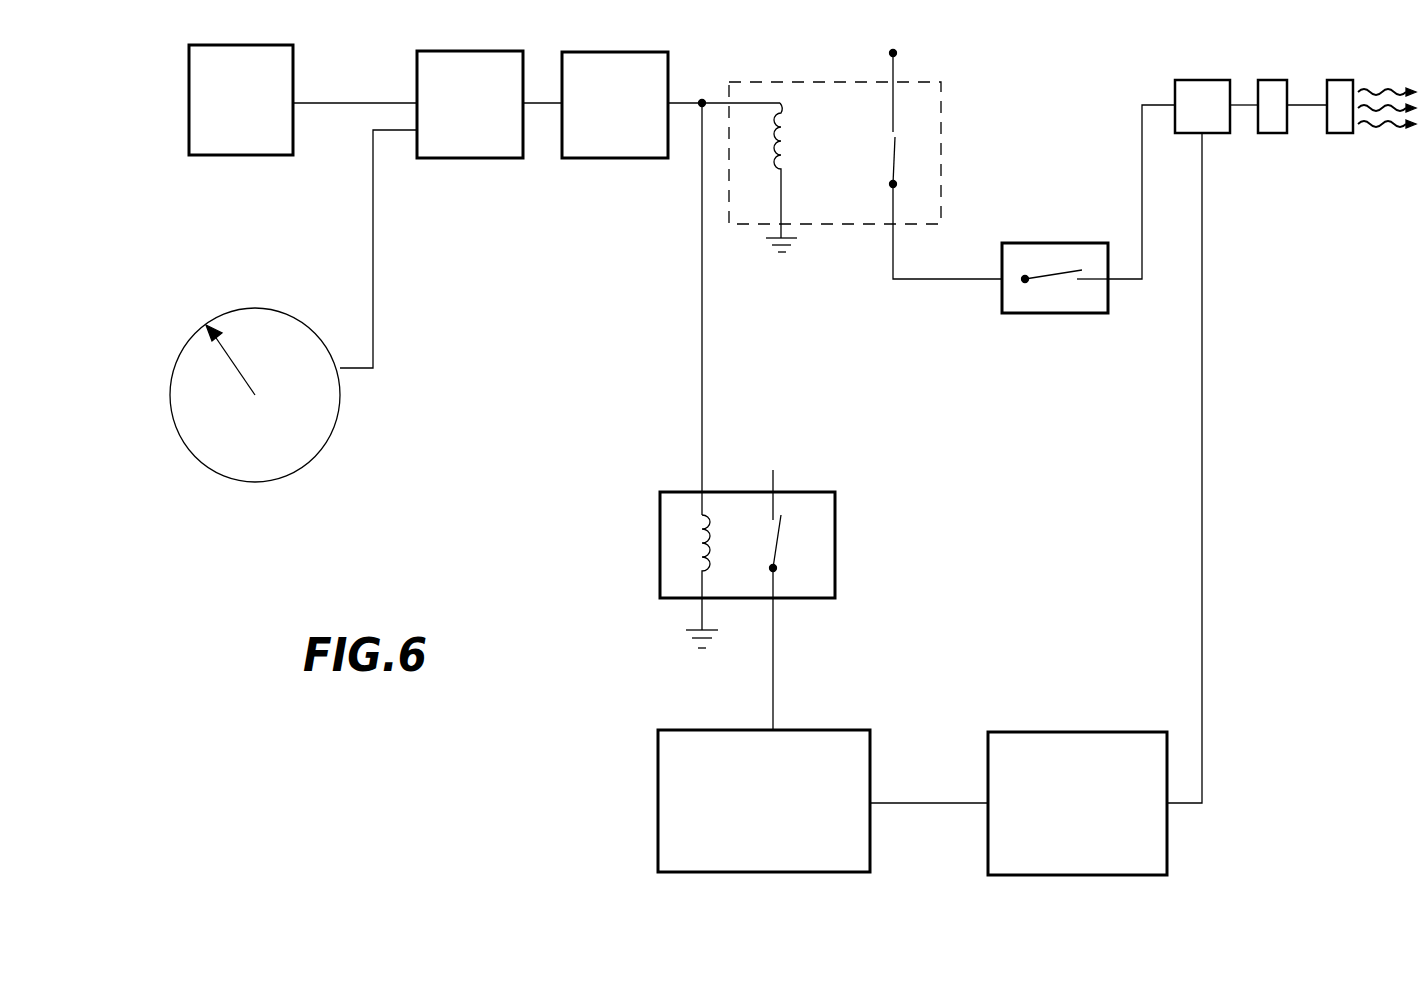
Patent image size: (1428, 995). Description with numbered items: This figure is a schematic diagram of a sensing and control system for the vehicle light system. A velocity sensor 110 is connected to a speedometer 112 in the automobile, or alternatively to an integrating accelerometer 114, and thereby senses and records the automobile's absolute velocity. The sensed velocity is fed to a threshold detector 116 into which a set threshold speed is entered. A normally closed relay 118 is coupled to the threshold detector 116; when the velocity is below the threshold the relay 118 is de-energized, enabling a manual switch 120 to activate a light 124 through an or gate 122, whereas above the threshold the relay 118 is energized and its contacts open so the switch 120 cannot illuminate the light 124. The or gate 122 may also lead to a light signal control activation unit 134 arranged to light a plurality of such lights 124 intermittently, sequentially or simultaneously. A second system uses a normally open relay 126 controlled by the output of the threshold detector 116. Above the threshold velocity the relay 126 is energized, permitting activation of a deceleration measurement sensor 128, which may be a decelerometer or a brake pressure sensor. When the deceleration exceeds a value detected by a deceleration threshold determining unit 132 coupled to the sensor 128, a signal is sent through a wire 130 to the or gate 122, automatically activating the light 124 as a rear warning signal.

The velocity sensor 110 is at (490, 122).
The speedometer 112 is at (292, 462).
The integrating accelerometer 114 is at (262, 122).
The threshold detector 116 is at (635, 122).
The relay 118 is at (786, 268).
The manual switch 120 is at (1067, 313).
The or gate 122 is at (1206, 80).
The light 124 is at (1351, 80).
The relay 126 is at (813, 598).
The sensor 128 is at (817, 733).
The wire 130 is at (1202, 683).
The deceleration threshold determining unit 132 is at (1067, 732).
The light signal control activation unit 134 is at (1275, 80).